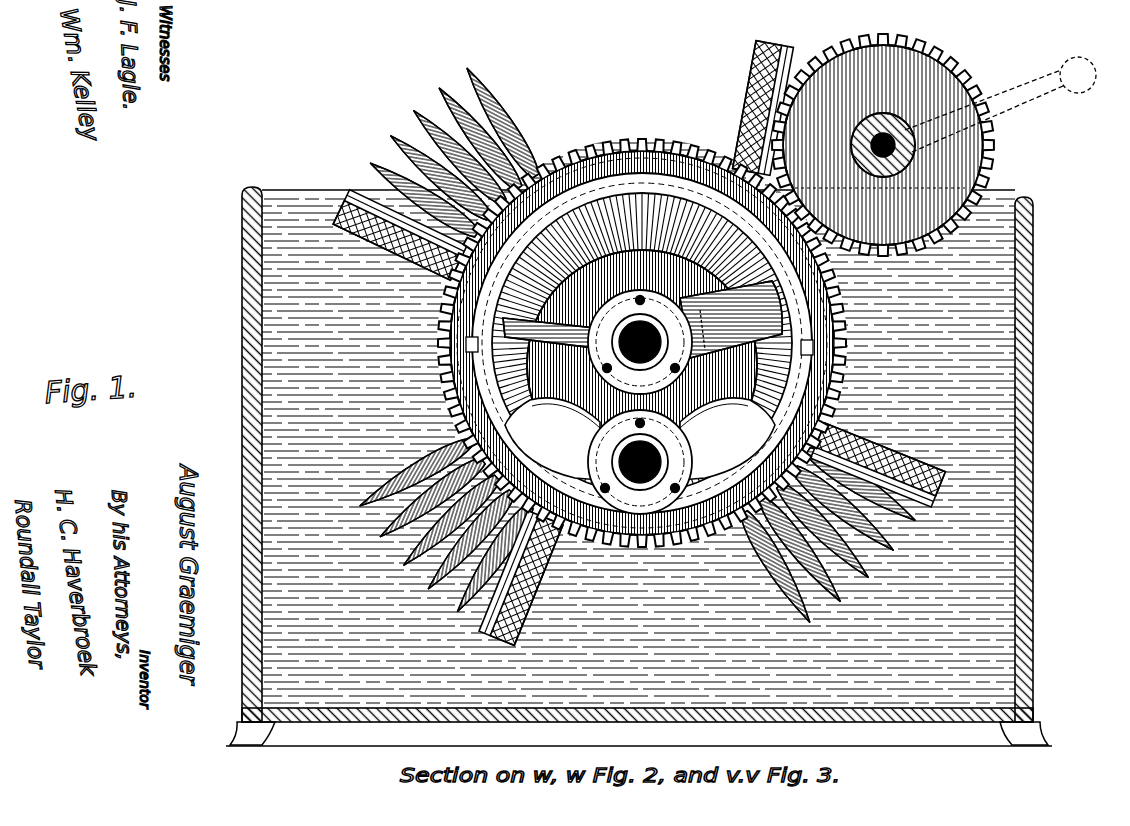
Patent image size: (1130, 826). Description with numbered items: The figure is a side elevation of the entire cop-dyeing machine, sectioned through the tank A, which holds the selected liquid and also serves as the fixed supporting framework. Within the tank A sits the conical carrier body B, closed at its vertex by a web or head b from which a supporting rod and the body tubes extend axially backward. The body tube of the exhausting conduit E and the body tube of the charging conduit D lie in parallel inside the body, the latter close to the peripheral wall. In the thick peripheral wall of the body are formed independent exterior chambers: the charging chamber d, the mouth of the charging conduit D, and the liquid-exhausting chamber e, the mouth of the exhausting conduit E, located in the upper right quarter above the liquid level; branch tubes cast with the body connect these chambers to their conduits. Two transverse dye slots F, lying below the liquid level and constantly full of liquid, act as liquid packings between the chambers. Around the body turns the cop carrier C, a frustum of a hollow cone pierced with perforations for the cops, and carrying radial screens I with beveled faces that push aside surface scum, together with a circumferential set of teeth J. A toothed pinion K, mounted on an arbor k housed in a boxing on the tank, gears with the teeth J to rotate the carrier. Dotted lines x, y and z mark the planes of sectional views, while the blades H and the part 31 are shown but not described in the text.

The tank A is at (262, 286).
The carrier body B is at (642, 339).
The cop carrier C is at (673, 341).
The charging conduit D is at (669, 462).
The exhausting conduit E is at (640, 342).
The dye slots F is at (466, 350).
The blades H is at (414, 113).
The screens I is at (343, 203).
The teeth J is at (583, 165).
The toothed pinion K is at (883, 145).
The arbor k is at (852, 140).
The web or head b is at (642, 343).
The charging chamber d is at (640, 439).
The liquid-exhausting chamber e is at (642, 319).
The dotted line x- x is at (618, 150).
The dotted line y- y is at (690, 150).
The dotted line z- z is at (278, 300).
The shaft 31 is at (1000, 104).